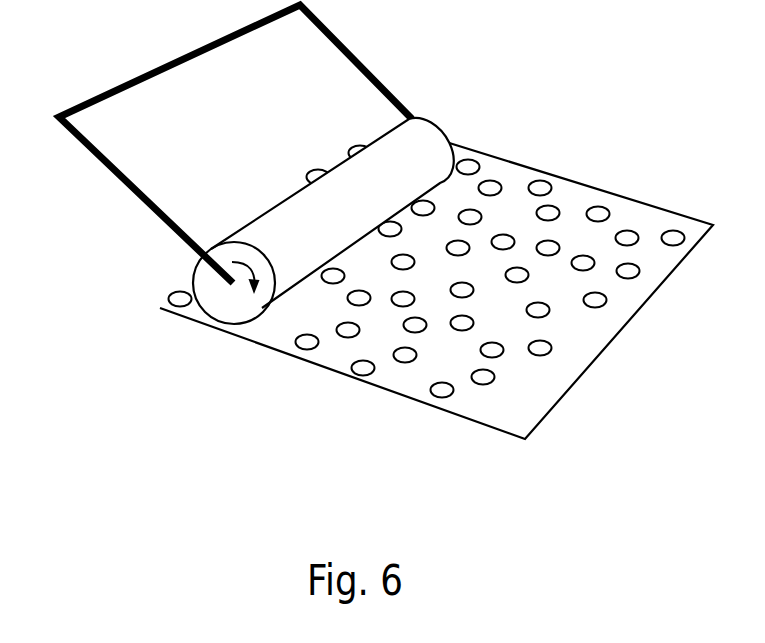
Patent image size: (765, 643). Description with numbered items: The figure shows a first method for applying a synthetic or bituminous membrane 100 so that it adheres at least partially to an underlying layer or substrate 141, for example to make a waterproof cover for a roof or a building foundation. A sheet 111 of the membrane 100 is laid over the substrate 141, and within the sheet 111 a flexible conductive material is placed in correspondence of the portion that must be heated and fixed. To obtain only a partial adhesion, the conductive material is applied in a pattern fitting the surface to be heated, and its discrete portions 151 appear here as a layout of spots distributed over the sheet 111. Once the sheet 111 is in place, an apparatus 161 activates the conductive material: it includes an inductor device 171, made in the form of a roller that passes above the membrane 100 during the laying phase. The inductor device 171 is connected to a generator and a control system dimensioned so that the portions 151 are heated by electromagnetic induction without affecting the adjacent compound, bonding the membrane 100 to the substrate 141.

The membrane 100 is at (436, 296).
The sheet 111 is at (488, 405).
The underlying layer (substrate) 141 is at (605, 450).
The portions of conductive material 151 is at (548, 248).
The apparatus 161 is at (112, 172).
The inductor device 171 is at (430, 141).